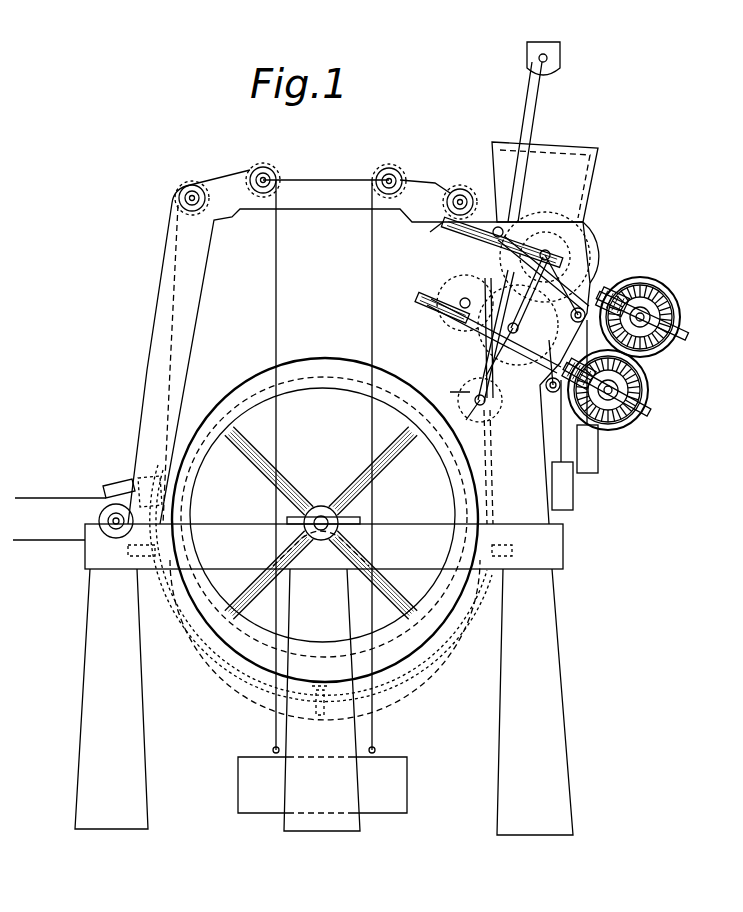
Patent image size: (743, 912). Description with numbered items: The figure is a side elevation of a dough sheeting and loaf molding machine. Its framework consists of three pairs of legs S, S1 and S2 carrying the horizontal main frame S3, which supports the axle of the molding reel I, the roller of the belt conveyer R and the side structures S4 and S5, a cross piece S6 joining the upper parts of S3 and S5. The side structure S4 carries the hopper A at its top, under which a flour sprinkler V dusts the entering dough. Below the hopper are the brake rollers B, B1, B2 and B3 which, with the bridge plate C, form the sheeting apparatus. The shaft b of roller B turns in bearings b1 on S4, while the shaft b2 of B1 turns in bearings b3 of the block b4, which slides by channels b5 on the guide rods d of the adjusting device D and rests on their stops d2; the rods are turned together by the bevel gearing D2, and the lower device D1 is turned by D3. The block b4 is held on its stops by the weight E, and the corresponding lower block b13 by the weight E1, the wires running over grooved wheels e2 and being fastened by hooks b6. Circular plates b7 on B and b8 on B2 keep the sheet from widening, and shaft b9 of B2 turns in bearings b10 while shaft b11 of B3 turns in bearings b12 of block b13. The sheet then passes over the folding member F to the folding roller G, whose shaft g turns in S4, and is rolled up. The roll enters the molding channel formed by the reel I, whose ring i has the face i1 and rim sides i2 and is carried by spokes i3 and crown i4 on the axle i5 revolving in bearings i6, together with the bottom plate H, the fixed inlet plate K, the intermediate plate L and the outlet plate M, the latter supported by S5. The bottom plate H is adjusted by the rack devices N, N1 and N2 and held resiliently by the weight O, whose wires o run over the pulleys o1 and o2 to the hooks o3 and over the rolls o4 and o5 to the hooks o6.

The side structure S5 is at (150, 348).
The cross piece S6 is at (316, 182).
The side structure S4 is at (591, 263).
The horizontal main frame S3 is at (556, 550).
The legs S is at (92, 672).
The legs S1 is at (553, 712).
The legs S2 is at (345, 823).
The weight arrangement O is at (322, 785).
The wires o is at (215, 176).
The grooved pulley o1 is at (268, 165).
The grooved pulley o2 is at (188, 182).
The hooks o3 is at (272, 748).
The grooved roll o4 is at (388, 163).
The grooved roll o5 is at (455, 186).
The hooks o6 is at (376, 748).
The rotating reel I is at (300, 358).
The ring i is at (350, 384).
The face i1 is at (240, 400).
The sides of the rim i2 is at (325, 365).
The spokes i3 is at (362, 470).
The crown i4 is at (321, 506).
The axle i5 is at (352, 520).
The bearings i6 is at (292, 518).
The bottom plate H is at (208, 645).
The intermediate plate L is at (478, 497).
The belt conveyer R is at (70, 496).
The outlet plate M is at (163, 492).
The rack device N is at (150, 570).
The rack device N1 is at (505, 570).
The rack device N2 is at (326, 696).
The hopper A is at (553, 156).
The adjusting device D is at (643, 127).
The flour sprinkler V is at (550, 58).
The brake roller B is at (585, 230).
The shaft b is at (590, 270).
The bearings b1 is at (575, 225).
The shaft b2 is at (458, 240).
The bearings b3 is at (495, 226).
The block b4 is at (456, 233).
The channels b5 is at (418, 300).
The hooks b6 is at (443, 226).
The circular plates b7 is at (590, 235).
The circular plates b8 is at (548, 395).
The shaft b9 is at (500, 350).
The bearings b10 is at (468, 298).
The shaft b11 is at (460, 300).
The bearings b12 is at (450, 297).
The block b13 is at (430, 314).
The brake roller B1 is at (492, 226).
The brake roller B2 is at (486, 336).
The brake roller B3 is at (452, 290).
The bridge plate C is at (504, 280).
The guide rods d is at (600, 296).
The stops d2 is at (520, 230).
The adjusting device D1 is at (478, 327).
The bevel gearing D2 is at (664, 308).
The bevel gearing D3 is at (641, 399).
The folding member F is at (495, 360).
The inlet plate K is at (472, 412).
The folding roller G is at (490, 408).
The shaft g is at (485, 412).
The grooved wheels e2 is at (547, 390).
The weight arrangement E is at (599, 452).
The weight arrangement E1 is at (574, 493).
The cord l is at (560, 455).